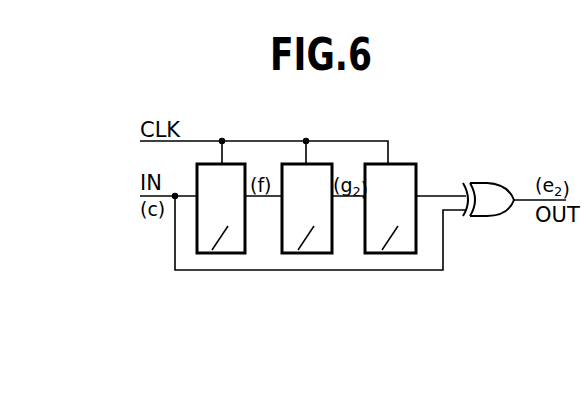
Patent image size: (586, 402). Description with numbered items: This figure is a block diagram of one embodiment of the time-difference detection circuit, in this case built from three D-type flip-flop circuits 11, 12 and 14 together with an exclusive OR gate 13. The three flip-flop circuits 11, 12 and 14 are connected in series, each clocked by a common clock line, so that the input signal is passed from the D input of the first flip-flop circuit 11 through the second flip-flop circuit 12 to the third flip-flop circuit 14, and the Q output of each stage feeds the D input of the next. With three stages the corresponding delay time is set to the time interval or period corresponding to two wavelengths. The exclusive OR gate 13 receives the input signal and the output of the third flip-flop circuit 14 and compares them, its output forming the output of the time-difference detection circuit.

The flip-flop circuit 11 is at (218, 254).
The flip-flop circuit 12 is at (320, 254).
The flip-flop circuit 14 is at (393, 254).
The exclusive OR gate 13 is at (486, 217).